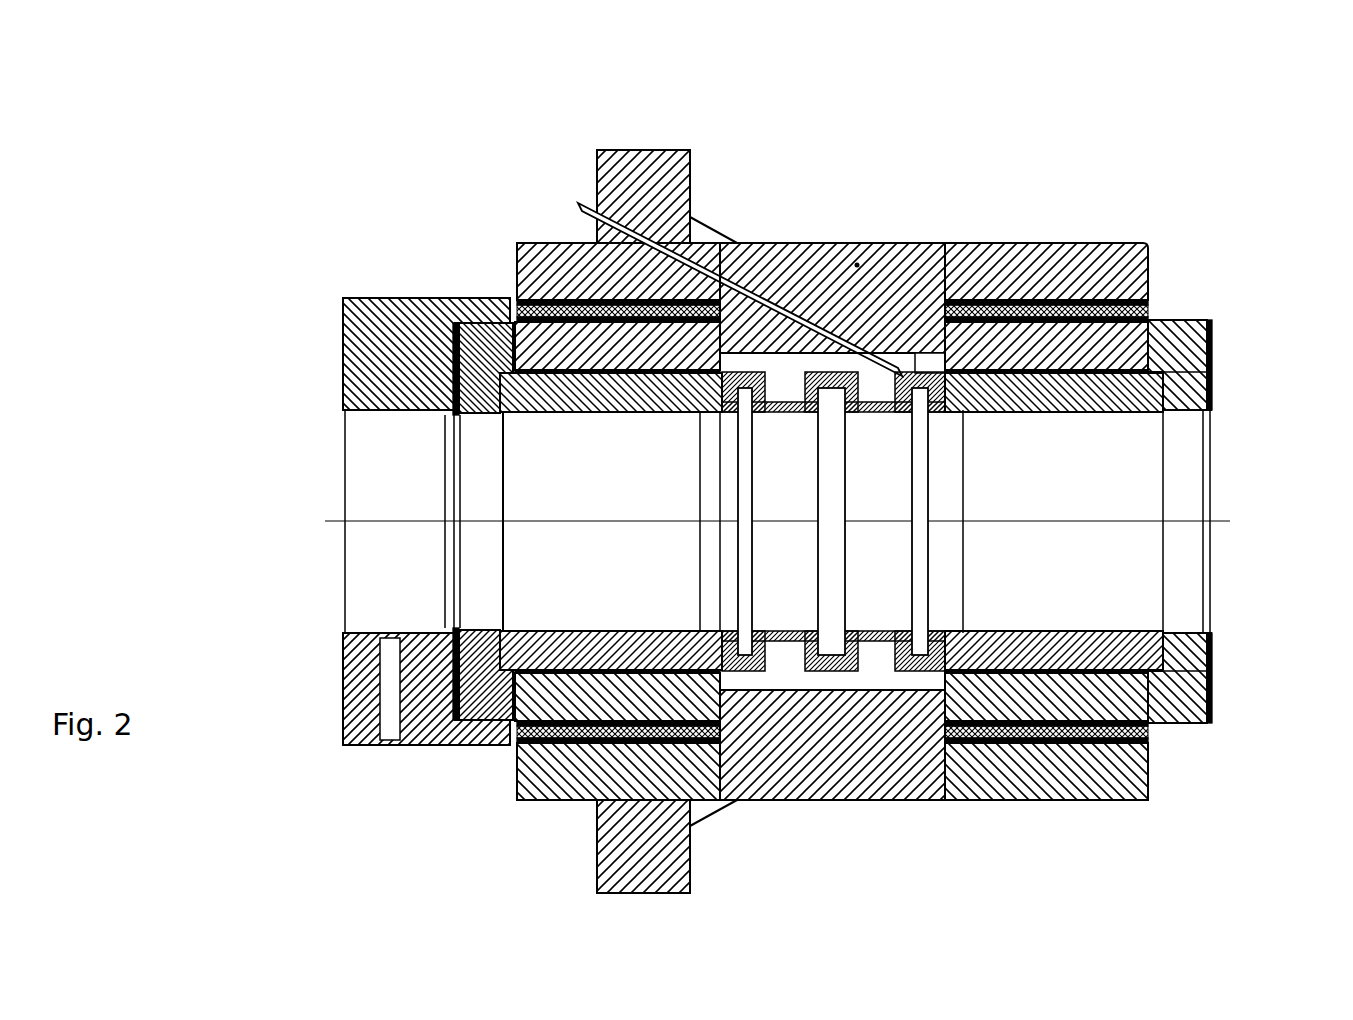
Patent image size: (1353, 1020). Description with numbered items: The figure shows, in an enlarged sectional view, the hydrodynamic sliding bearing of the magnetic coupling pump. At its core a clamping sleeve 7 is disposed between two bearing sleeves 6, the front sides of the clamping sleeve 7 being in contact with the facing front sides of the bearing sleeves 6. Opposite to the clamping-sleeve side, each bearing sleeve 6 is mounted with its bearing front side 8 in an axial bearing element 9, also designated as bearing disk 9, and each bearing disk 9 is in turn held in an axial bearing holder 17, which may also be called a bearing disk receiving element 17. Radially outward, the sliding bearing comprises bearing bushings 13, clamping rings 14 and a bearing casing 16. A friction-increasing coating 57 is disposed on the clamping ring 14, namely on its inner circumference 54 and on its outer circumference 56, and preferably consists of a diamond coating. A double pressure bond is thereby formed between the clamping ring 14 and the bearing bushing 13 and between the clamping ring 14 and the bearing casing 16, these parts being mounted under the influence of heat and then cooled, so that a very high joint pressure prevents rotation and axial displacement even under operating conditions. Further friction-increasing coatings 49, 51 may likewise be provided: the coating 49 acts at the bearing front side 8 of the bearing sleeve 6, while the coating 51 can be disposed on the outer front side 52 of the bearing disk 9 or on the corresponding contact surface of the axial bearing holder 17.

The bearing sleeve 6 is at (942, 473).
The clamping sleeve 7 is at (880, 372).
The bearing front side 8 is at (446, 388).
The axial bearing element 9 is at (822, 390).
The bearing bushing 13 is at (810, 427).
The clamping ring 14 is at (826, 363).
The bearing casing 16 is at (845, 427).
The axial bearing holder 17 is at (317, 401).
The friction-increasing coating 49 is at (1258, 429).
The friction-increasing coating 51 is at (1258, 447).
The outer front side 52 is at (358, 401).
The inner circumference 54 is at (805, 427).
The outer circumference 56 is at (740, 216).
The friction-increasing coating 57 is at (1106, 426).